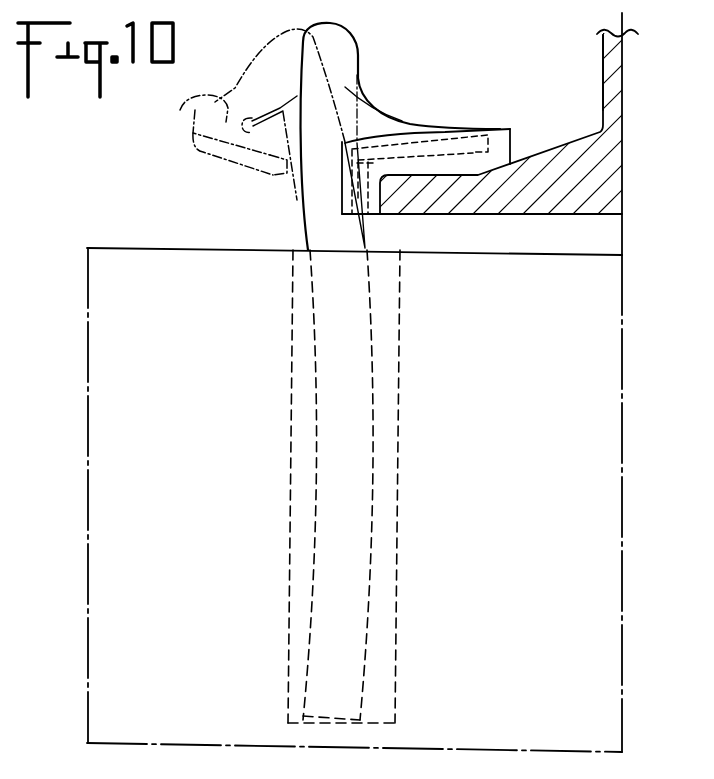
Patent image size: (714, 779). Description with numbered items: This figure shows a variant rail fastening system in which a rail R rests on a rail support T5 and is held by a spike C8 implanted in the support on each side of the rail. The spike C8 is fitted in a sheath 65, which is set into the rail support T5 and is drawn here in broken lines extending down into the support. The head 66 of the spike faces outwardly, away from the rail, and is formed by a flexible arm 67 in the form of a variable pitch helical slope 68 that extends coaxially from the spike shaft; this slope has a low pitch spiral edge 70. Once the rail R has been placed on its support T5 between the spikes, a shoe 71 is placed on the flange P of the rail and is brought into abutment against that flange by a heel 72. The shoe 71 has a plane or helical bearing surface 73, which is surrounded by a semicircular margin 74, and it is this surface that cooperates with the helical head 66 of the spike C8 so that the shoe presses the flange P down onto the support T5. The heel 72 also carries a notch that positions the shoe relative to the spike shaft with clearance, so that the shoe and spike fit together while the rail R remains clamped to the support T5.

The sheath 65 is at (388, 375).
The head 66 is at (279, 35).
The flexible arm 67 is at (212, 93).
The variable pitch helical slope 68 is at (218, 160).
The low pitch spiral edge 70 is at (190, 133).
The shoe 71 is at (463, 143).
The heel 72 is at (377, 203).
The bearing surface 73 is at (395, 129).
The semicircular margin 74 is at (502, 136).
The spike C8 is at (312, 220).
The rail support T5 is at (125, 258).
The flange P is at (588, 193).
The rail R is at (614, 88).